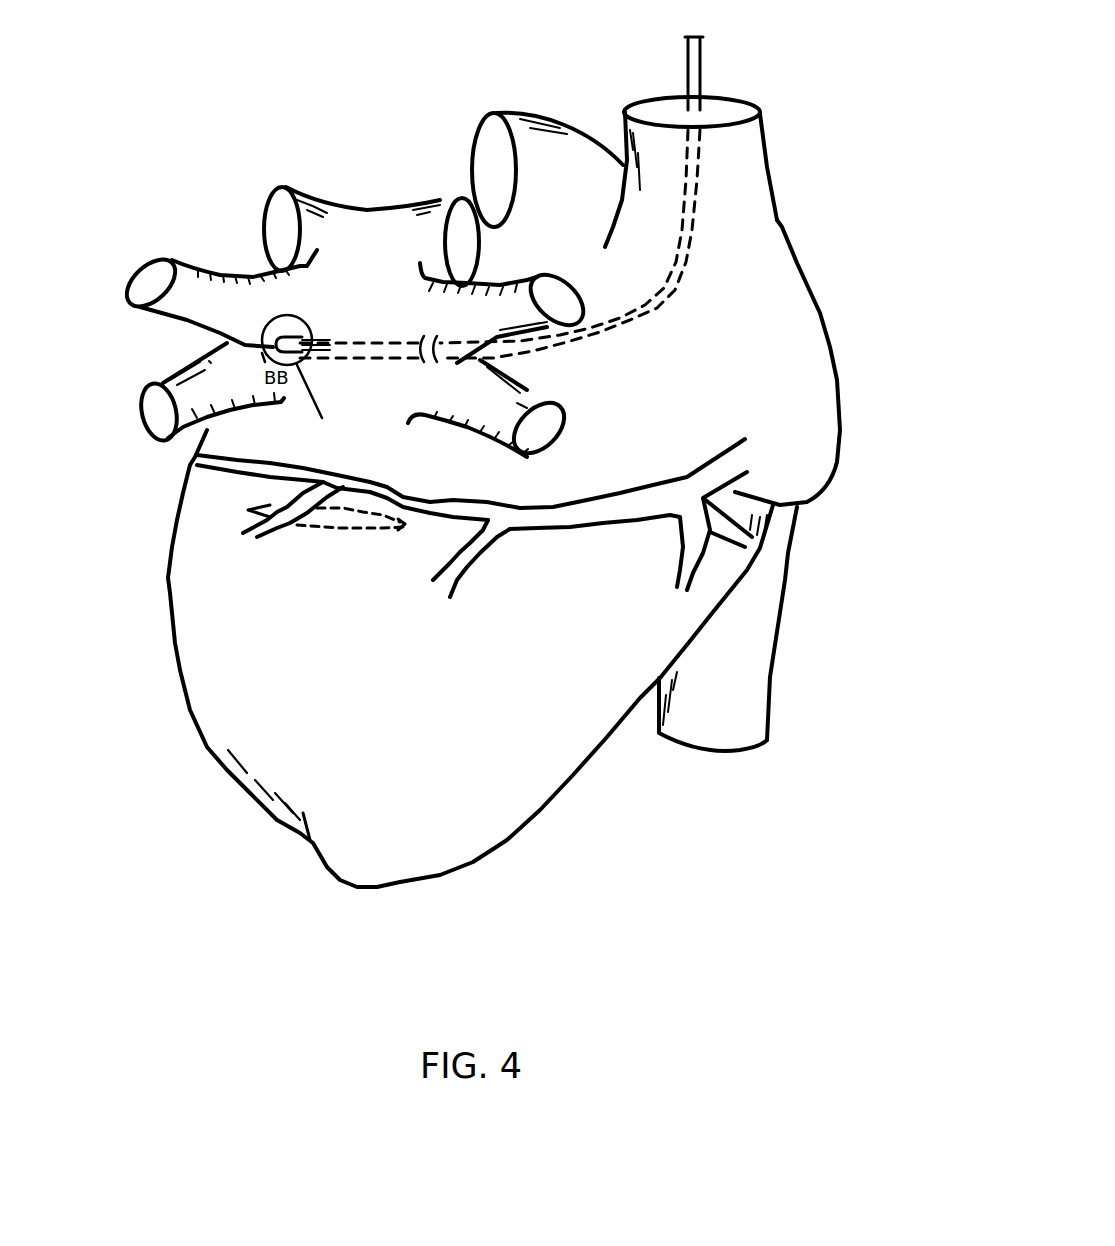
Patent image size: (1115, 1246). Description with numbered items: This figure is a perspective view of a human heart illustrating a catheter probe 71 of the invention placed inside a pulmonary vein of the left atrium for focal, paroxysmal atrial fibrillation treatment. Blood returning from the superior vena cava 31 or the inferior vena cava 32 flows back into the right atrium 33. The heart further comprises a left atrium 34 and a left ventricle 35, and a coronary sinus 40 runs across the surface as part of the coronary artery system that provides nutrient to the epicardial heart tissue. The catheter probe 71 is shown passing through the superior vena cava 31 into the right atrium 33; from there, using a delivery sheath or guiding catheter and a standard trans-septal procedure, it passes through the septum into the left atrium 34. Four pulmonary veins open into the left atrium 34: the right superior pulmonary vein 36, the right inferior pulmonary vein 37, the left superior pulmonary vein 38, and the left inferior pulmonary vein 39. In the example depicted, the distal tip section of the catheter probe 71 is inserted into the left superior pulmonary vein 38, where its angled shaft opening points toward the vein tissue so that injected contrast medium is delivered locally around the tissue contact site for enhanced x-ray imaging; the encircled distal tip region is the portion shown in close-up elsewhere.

The superior vena cava 31 is at (748, 142).
The inferior vena cava 32 is at (770, 678).
The right atrium 33 is at (765, 345).
The left atrium 34 is at (350, 285).
The left ventricle 35 is at (272, 610).
The right superior pulmonary vein 36 is at (497, 285).
The right inferior pulmonary vein 37 is at (522, 392).
The left superior pulmonary vein 38 is at (190, 262).
The left inferior pulmonary vein 39 is at (180, 367).
The coronary sinus 40 is at (737, 463).
The catheter probe 71 is at (703, 77).